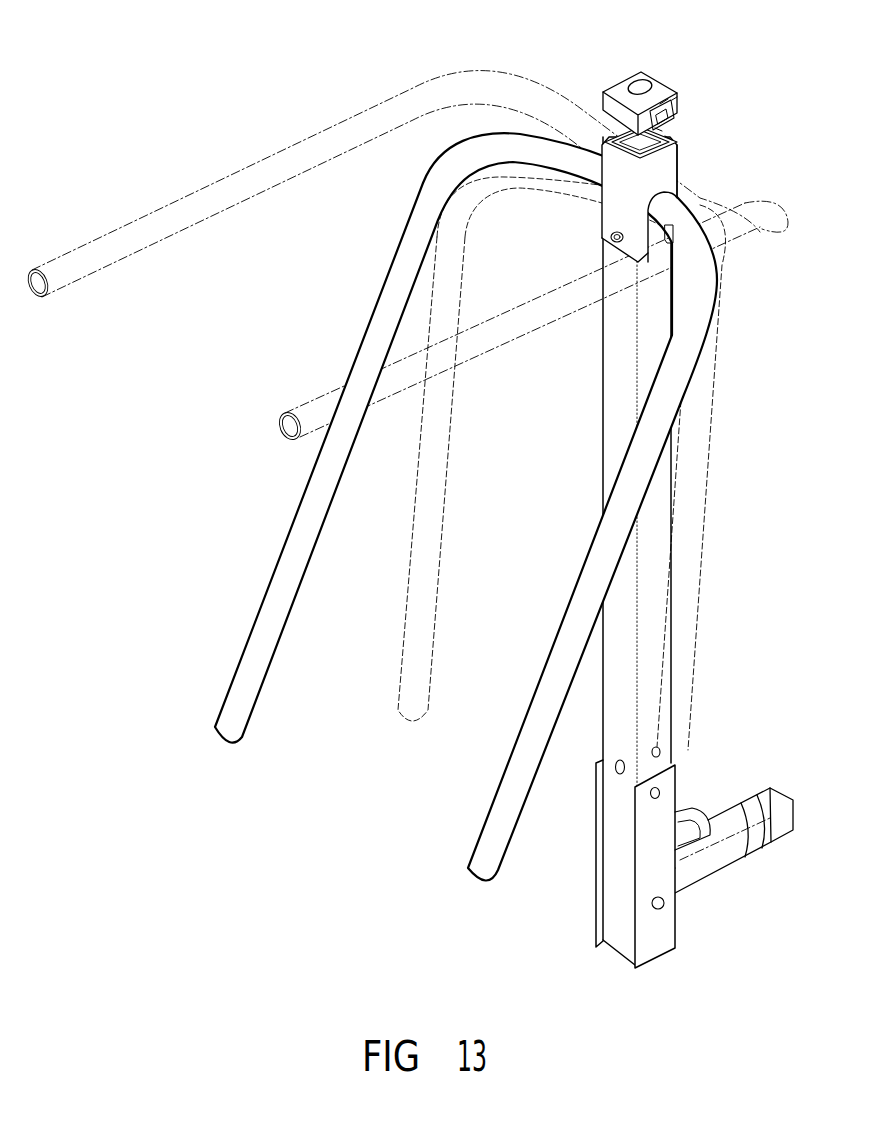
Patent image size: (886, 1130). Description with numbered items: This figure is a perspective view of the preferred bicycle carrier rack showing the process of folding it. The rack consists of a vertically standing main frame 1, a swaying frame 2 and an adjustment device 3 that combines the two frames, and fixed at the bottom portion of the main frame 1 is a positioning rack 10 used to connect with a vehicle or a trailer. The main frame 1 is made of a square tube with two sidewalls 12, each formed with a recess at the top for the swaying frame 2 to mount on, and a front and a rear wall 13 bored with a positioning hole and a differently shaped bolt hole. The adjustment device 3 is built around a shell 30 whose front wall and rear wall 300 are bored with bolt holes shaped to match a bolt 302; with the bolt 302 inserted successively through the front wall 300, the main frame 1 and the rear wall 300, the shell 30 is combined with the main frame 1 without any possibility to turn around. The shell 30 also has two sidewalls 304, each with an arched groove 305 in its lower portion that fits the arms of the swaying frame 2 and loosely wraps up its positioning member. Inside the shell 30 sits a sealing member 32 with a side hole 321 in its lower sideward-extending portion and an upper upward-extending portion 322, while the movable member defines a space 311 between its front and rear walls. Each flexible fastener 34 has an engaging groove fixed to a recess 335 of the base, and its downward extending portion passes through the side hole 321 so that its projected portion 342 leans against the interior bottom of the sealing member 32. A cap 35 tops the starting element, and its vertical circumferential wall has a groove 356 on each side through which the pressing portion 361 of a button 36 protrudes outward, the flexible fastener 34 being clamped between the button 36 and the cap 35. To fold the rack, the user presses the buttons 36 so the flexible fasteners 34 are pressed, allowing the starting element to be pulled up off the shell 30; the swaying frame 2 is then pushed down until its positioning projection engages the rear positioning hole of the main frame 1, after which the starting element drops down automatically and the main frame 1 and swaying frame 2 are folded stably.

The main frame 1 is at (489, 550).
The swaying frame 2 is at (395, 263).
The adjustment device 3 is at (652, 172).
The positioning rack 10 is at (727, 863).
The sidewalls 12 is at (603, 370).
The front and rear wall 13 is at (625, 412).
The shell 30 is at (616, 237).
The front wall and rear wall 300 is at (612, 203).
The bolt 302 is at (608, 242).
The sidewalls 304 is at (668, 182).
The arched groove 305 is at (657, 250).
The sealing member 32 is at (679, 121).
The side hole 321 is at (660, 149).
The upper upward-extending portion 322 is at (623, 150).
The flexible fastener 34 is at (662, 127).
The projected portion 342 is at (673, 133).
The cap 35 is at (677, 71).
The space 311 is at (623, 118).
The recess 335 is at (681, 101).
The groove 356 is at (677, 113).
The button 36 is at (673, 118).
The pressing portion 361 is at (660, 113).